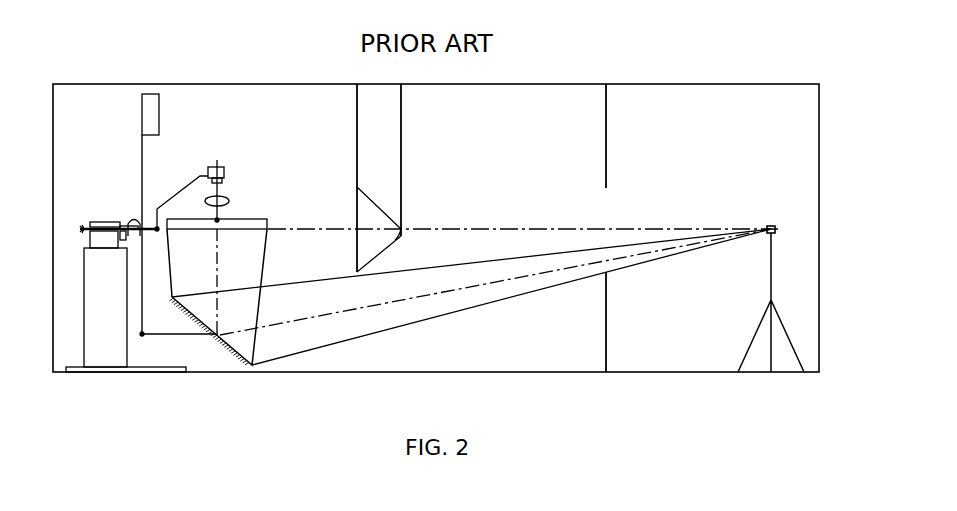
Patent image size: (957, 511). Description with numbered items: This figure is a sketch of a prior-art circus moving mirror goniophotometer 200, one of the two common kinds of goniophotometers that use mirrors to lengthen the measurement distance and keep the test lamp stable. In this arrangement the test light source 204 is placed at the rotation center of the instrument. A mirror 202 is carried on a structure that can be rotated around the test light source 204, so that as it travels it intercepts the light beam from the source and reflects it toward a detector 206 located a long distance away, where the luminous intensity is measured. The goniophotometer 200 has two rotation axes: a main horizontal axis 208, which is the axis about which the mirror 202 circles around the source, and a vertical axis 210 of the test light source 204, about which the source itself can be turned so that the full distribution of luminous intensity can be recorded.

The circus moving mirror goniophotometer 200 is at (437, 372).
The mirror 202 is at (219, 341).
The test light source 204 is at (252, 231).
The detector 206 is at (813, 202).
The main horizontal axis 208 is at (127, 205).
The vertical axis 210 is at (275, 207).